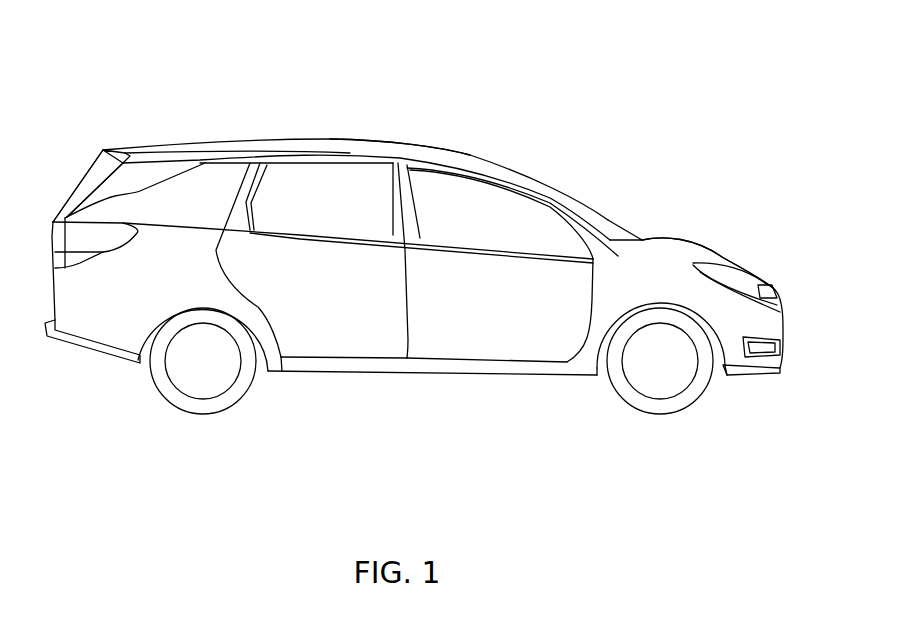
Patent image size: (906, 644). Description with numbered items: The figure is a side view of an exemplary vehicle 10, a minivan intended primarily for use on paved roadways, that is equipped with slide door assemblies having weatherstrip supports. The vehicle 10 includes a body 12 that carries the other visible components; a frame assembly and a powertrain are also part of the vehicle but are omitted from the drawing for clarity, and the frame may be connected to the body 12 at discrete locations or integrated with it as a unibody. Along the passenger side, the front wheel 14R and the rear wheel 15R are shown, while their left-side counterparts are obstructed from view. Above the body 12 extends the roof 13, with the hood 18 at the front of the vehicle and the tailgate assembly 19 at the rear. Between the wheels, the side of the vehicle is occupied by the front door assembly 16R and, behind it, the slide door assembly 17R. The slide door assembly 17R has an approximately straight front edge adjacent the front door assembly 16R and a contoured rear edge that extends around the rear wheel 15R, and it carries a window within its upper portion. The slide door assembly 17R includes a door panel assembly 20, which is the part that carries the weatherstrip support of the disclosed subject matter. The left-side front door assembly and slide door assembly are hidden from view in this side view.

The vehicle 10 is at (380, 108).
The body 12 is at (538, 377).
The roof 13 is at (287, 137).
The right-side front wheel 14R is at (658, 416).
The right-side rear wheel 15R is at (205, 416).
The right-side front door assembly 16R is at (465, 347).
The right-side slide door assembly 17R is at (325, 342).
The hood 18 is at (705, 242).
The tailgate assembly 19 is at (83, 187).
The door panel assembly 20 is at (370, 332).